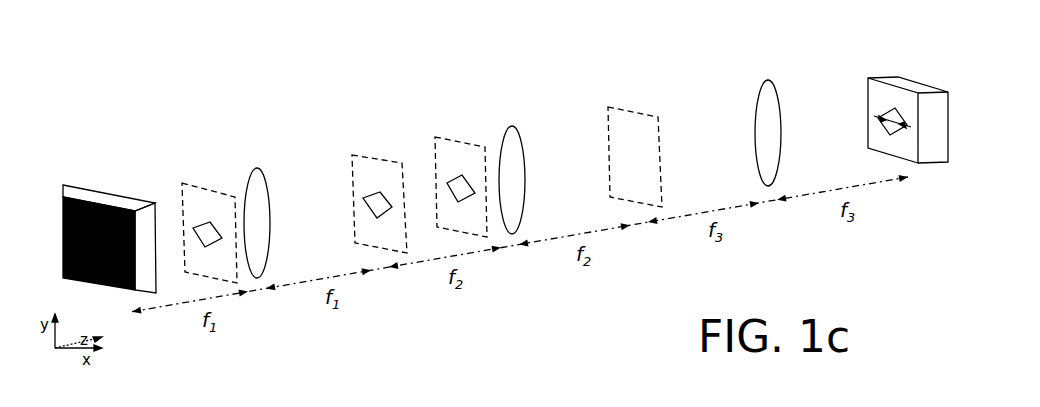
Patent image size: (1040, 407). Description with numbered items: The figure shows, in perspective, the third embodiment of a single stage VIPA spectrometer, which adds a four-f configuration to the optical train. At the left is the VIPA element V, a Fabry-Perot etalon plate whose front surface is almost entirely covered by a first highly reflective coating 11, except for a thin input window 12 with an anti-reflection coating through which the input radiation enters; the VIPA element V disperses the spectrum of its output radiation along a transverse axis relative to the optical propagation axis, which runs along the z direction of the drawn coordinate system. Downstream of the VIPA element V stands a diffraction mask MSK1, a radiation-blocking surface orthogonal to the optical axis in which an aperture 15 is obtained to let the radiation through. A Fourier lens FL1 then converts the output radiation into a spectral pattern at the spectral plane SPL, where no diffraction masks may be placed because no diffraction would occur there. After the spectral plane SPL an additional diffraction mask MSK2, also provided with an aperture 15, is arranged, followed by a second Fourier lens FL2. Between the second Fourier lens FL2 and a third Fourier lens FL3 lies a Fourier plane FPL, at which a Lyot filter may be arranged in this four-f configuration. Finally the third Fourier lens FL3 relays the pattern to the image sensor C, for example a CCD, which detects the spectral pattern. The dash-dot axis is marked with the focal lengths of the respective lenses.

The first highly reflective coating 11 is at (75, 226).
The input window 12 is at (141, 206).
The aperture 15 is at (206, 236).
The VIPA element V is at (115, 190).
The diffraction mask MSK1 is at (202, 192).
The Fourier lens FL1 is at (254, 192).
The spectral plane SPL is at (380, 168).
The additional diffraction mask MSK2 is at (455, 152).
The second Fourier lens FL2 is at (510, 142).
The Fourier plane FPL is at (632, 132).
The third Fourier lens FL3 is at (768, 98).
The image sensor C is at (910, 88).